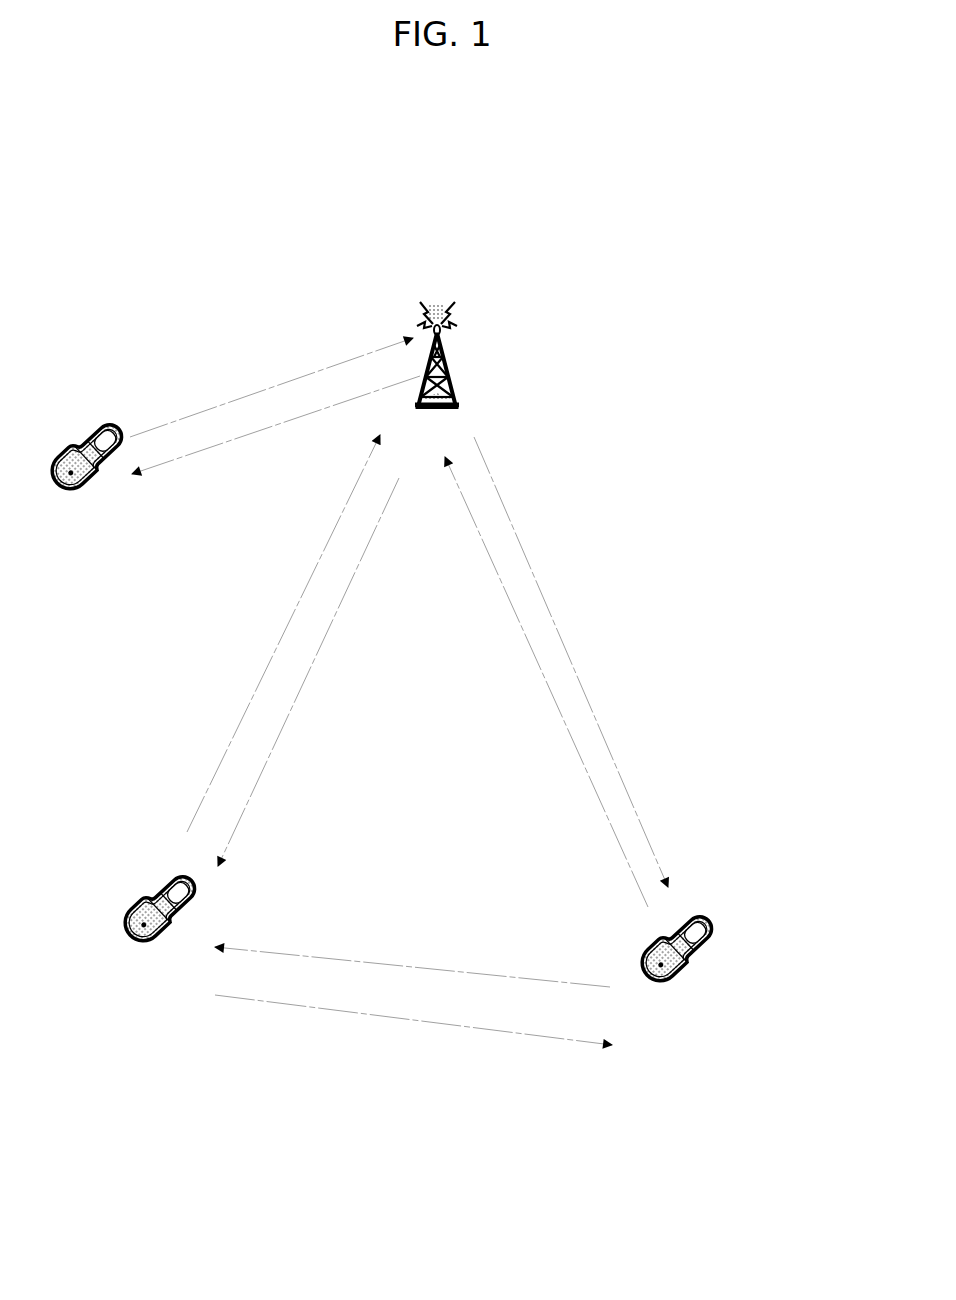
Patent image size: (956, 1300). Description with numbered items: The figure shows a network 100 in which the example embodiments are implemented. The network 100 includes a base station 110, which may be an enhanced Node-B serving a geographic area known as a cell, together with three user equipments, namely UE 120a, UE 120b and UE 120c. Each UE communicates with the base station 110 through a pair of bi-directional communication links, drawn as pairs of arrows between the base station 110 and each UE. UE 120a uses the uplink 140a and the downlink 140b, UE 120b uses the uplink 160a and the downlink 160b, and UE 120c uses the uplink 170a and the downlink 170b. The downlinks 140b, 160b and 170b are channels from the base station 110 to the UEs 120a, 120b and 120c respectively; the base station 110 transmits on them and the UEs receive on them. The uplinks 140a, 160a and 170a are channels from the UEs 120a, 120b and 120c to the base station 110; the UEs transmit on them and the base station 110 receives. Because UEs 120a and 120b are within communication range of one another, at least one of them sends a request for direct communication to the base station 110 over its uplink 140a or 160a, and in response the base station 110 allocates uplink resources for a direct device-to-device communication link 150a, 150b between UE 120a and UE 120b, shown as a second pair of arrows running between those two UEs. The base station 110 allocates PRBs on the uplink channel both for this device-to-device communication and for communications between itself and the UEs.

The network 100 is at (641, 322).
The base station 110 is at (458, 310).
The UE 120a is at (150, 890).
The UE 120b is at (690, 910).
The UE 120c is at (102, 420).
The uplink 140a is at (303, 585).
The downlink 140b is at (323, 638).
The uplink channel 150a is at (340, 960).
The uplink channel 150b is at (367, 1015).
The uplink 160a is at (577, 753).
The downlink 160b is at (553, 620).
The uplink 170a is at (218, 405).
The downlink 170b is at (200, 455).